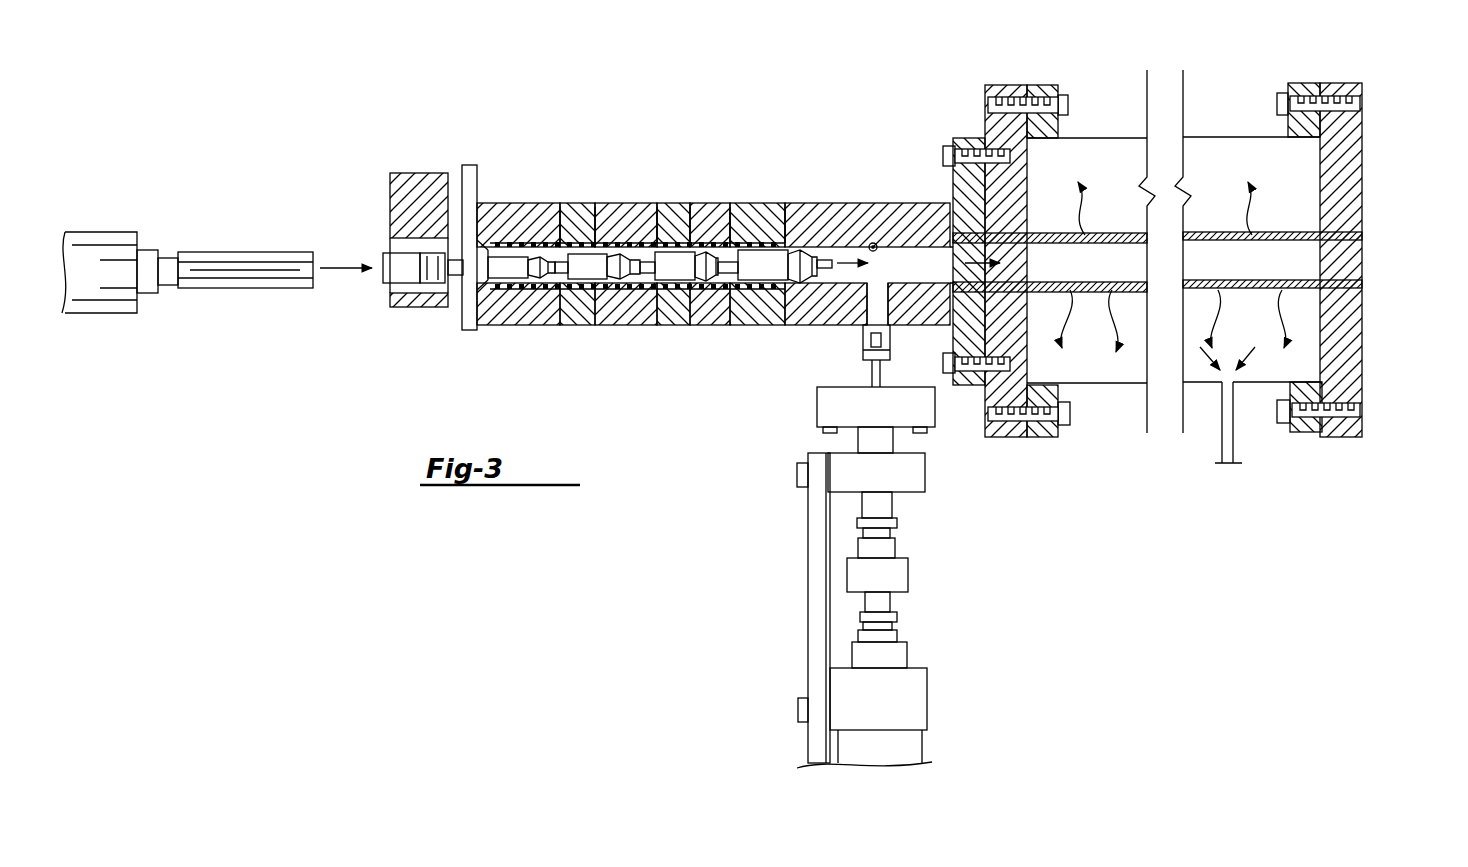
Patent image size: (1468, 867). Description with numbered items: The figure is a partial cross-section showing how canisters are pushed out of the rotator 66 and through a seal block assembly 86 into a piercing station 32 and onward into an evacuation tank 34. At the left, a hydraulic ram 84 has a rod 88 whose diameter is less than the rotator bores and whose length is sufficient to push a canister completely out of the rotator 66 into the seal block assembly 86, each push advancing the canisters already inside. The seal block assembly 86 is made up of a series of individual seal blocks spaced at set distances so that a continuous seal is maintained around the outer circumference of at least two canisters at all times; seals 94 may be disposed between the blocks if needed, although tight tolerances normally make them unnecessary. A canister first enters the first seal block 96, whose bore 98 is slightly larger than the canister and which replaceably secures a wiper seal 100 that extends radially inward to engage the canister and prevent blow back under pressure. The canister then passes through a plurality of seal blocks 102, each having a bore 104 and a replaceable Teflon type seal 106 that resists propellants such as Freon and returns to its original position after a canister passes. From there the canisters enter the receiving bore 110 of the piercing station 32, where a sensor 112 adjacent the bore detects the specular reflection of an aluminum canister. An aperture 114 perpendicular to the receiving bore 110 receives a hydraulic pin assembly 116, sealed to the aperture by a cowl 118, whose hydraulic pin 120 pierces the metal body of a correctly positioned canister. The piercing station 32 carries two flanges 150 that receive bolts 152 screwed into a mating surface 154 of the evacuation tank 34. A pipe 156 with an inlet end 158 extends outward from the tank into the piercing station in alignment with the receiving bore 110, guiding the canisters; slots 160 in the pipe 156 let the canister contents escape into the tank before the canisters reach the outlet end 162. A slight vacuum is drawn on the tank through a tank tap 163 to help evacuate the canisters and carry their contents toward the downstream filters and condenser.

The piercing station 32 is at (776, 175).
The evacuation tank 34 is at (1232, 96).
The rotator 66 is at (408, 212).
The hydraulic ram 84 is at (108, 268).
The seal block assembly 86 is at (688, 160).
The rod 88 is at (222, 262).
The seals 94 is at (535, 288).
The first seal block 96 is at (505, 220).
The bore 98 is at (490, 290).
The wiper seal 100 is at (545, 235).
The seal blocks 102 is at (612, 215).
The bore 104 is at (582, 290).
The Teflon type seal 106 is at (660, 292).
The receiving bore 110 is at (930, 330).
The sensor 112 is at (870, 243).
The aperture 114 is at (880, 300).
The hydraulic pin assembly 116 is at (792, 474).
The cowl 118 is at (876, 360).
The hydraulic pin 120 is at (865, 350).
The flanges 150 is at (962, 182).
The bolts 152 is at (970, 180).
The mating surface 154 is at (993, 100).
The pipe 156 is at (1138, 294).
The inlet end 158 is at (946, 266).
The slots 160 is at (1088, 245).
The outlet end 162 is at (1338, 272).
The tank tap 163 is at (1230, 395).